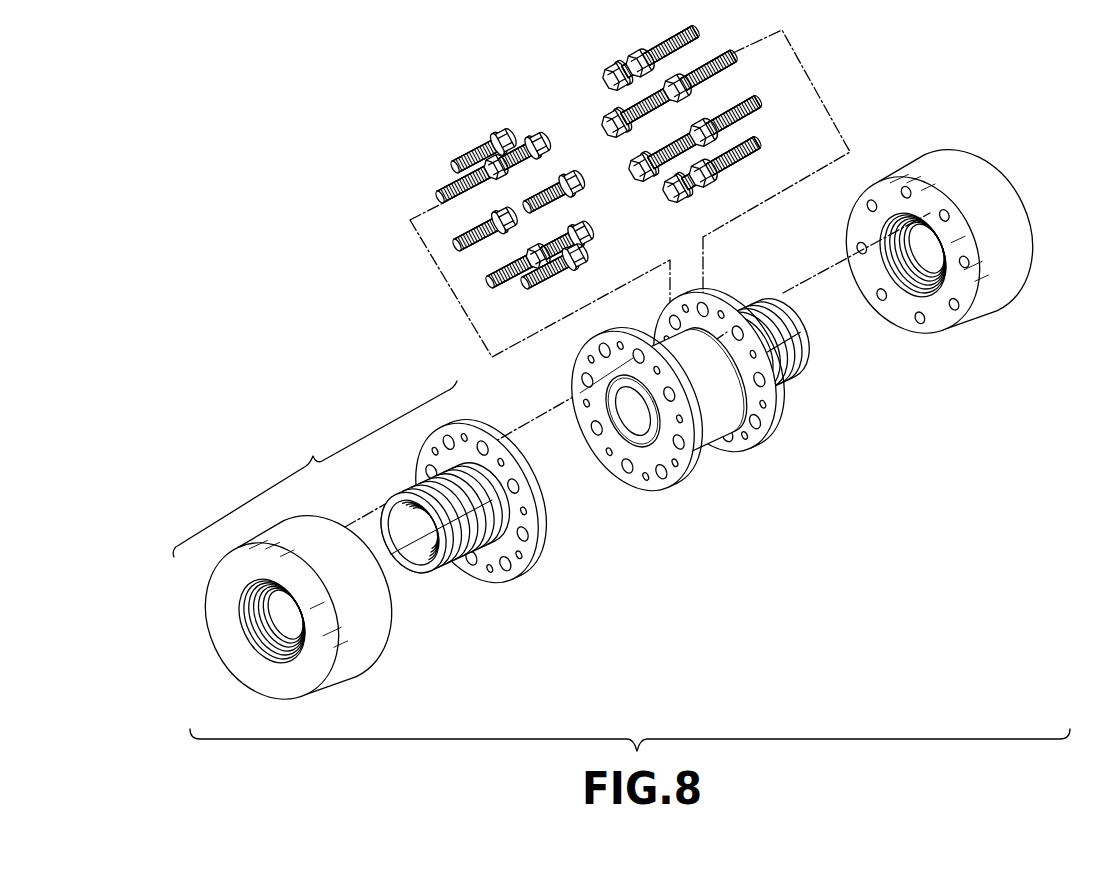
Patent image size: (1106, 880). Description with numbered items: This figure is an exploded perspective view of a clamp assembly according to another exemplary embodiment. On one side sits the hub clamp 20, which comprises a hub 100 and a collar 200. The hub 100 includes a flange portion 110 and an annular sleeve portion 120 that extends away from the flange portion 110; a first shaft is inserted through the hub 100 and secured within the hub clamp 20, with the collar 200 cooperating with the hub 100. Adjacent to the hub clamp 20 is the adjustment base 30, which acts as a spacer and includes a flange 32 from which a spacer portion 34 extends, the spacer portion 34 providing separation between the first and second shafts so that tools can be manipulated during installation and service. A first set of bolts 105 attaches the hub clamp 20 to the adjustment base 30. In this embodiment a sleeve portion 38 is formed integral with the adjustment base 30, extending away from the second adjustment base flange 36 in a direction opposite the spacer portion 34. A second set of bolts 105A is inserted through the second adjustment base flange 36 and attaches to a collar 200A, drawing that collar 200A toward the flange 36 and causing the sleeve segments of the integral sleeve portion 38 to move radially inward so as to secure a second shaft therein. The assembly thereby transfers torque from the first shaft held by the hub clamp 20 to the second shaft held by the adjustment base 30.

The hub clamp 20 is at (315, 469).
The adjustment base 30 is at (706, 410).
The flange 32 is at (658, 483).
The spacer portion 34 is at (703, 387).
The second adjustment base flange 36 is at (770, 410).
The sleeve portion 38 is at (797, 353).
The hub 100 is at (477, 538).
The first set of bolts 105 is at (450, 188).
The second set of bolts 105A is at (633, 63).
The flange portion 110 is at (543, 533).
The annular sleeve portion 120 is at (452, 563).
The collar 200 is at (350, 653).
The collar 200A is at (988, 287).